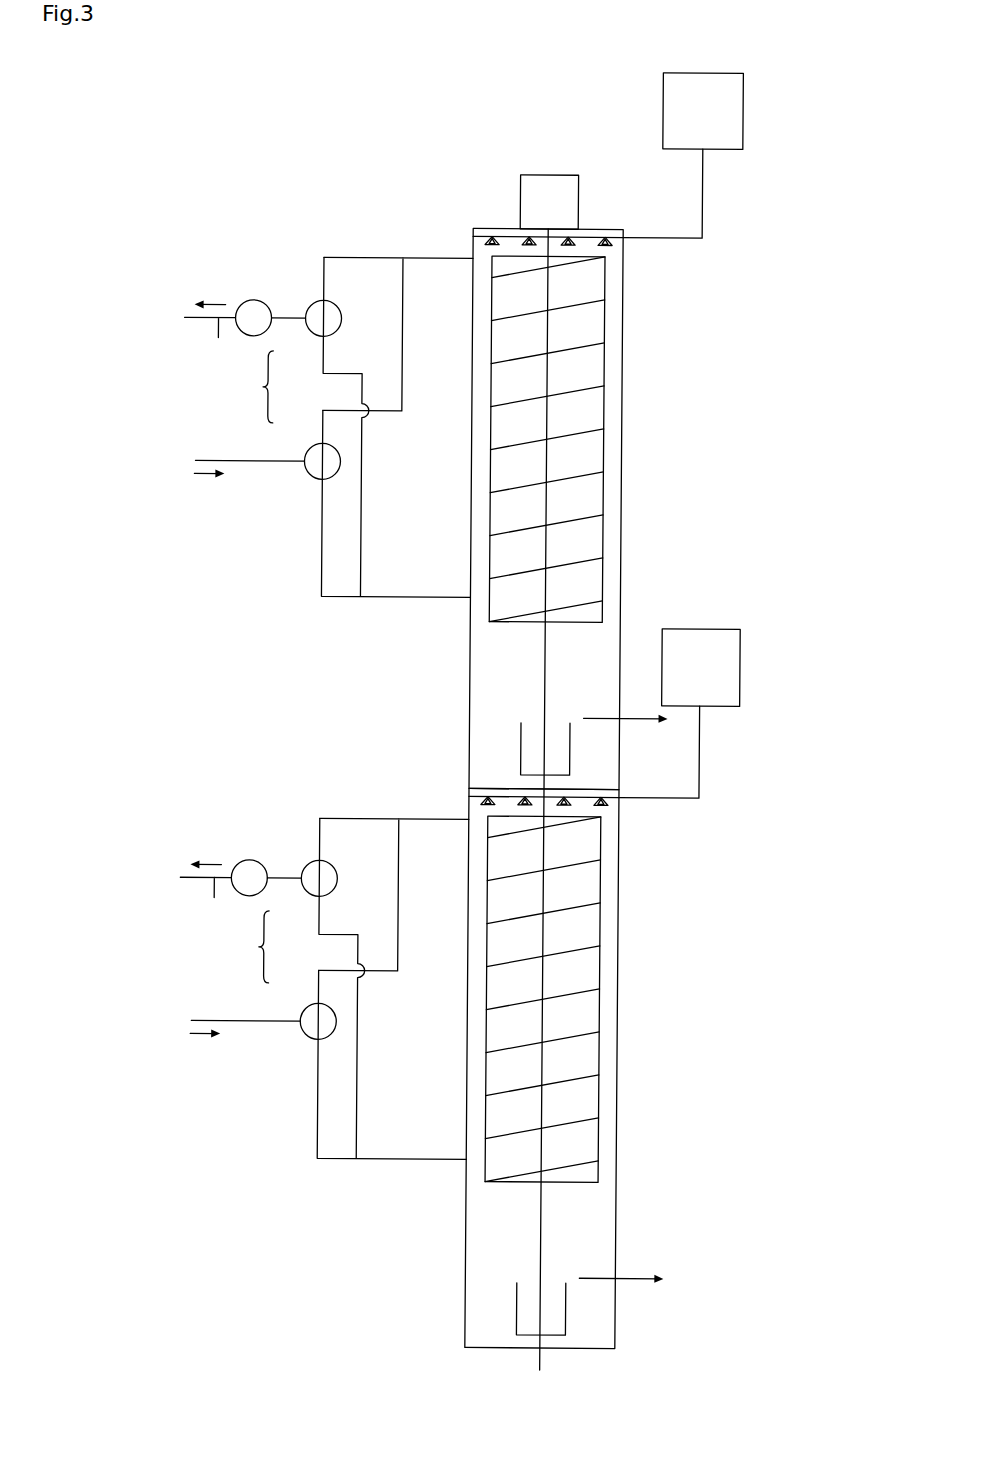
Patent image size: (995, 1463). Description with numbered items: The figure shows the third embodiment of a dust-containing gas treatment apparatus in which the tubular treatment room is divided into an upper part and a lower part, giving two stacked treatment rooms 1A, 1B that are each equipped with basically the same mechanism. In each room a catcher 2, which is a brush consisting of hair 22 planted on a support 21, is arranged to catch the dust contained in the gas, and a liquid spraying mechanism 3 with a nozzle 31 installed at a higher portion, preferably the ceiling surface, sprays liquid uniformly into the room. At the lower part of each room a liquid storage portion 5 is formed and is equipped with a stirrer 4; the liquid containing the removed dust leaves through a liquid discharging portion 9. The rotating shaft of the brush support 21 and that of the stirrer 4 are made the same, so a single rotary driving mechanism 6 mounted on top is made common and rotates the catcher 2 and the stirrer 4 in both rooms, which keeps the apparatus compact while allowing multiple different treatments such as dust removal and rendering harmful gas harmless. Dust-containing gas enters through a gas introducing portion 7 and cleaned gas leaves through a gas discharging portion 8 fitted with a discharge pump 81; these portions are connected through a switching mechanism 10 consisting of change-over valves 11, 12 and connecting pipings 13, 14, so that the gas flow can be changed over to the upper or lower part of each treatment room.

The treatment room 1A is at (618, 892).
The treatment room 1B is at (618, 332).
The catcher 2 is at (604, 282).
The support 21 is at (547, 415).
The hair 22 is at (575, 433).
The liquid spraying mechanism 3 is at (740, 100).
The nozzle 31 is at (618, 243).
The stirrer 4 is at (572, 755).
The liquid storage portion 5 is at (502, 742).
The rotary driving mechanism 6 is at (530, 175).
The gas introducing portion 7 is at (229, 463).
The gas discharging portion 8 is at (208, 613).
The discharge pump 81 is at (251, 305).
The liquid discharging portion 9 is at (624, 1013).
The switching mechanism 10 is at (251, 667).
The change-over valve 11 is at (312, 457).
The change-over valve 12 is at (299, 337).
The connecting piping 13 is at (429, 603).
The connecting piping 14 is at (428, 255).